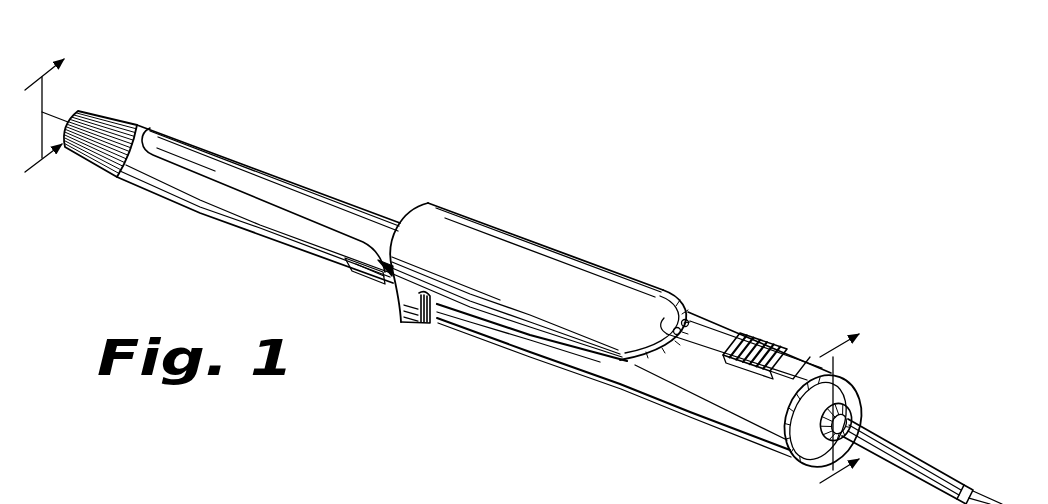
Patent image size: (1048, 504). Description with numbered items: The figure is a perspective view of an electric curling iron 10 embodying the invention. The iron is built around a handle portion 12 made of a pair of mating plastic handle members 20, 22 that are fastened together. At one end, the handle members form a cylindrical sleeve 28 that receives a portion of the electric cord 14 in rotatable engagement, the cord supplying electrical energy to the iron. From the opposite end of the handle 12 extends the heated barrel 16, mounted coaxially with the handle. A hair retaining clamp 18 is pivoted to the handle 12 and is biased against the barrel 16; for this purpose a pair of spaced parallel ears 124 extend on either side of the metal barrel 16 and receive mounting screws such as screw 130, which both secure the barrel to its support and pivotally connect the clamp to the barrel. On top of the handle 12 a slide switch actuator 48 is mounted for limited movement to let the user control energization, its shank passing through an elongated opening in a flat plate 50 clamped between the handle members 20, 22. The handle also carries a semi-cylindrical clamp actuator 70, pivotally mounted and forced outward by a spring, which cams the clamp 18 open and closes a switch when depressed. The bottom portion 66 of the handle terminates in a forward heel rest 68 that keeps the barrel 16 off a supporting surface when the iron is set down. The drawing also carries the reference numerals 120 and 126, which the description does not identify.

The electric curling iron 10 is at (513, 275).
The handle portion 12 is at (671, 412).
The electric cord 14 is at (903, 448).
The heated barrel 16 is at (188, 207).
The clamp 18 is at (223, 158).
The handle member 20 is at (860, 390).
The handle member 22 is at (797, 455).
The cylindrical sleeve 28 is at (853, 410).
The slide switch actuator 48 is at (765, 333).
The flat plate 50 is at (700, 328).
The bottom portion 66 is at (502, 345).
The forward heel rest 68 is at (412, 325).
The clamp actuator 70 is at (513, 235).
The knurled tip nut 120 is at (89, 160).
The spaced parallel ears 124 is at (355, 262).
The latch tab 126 is at (374, 283).
The mounting screw 130 is at (365, 271).